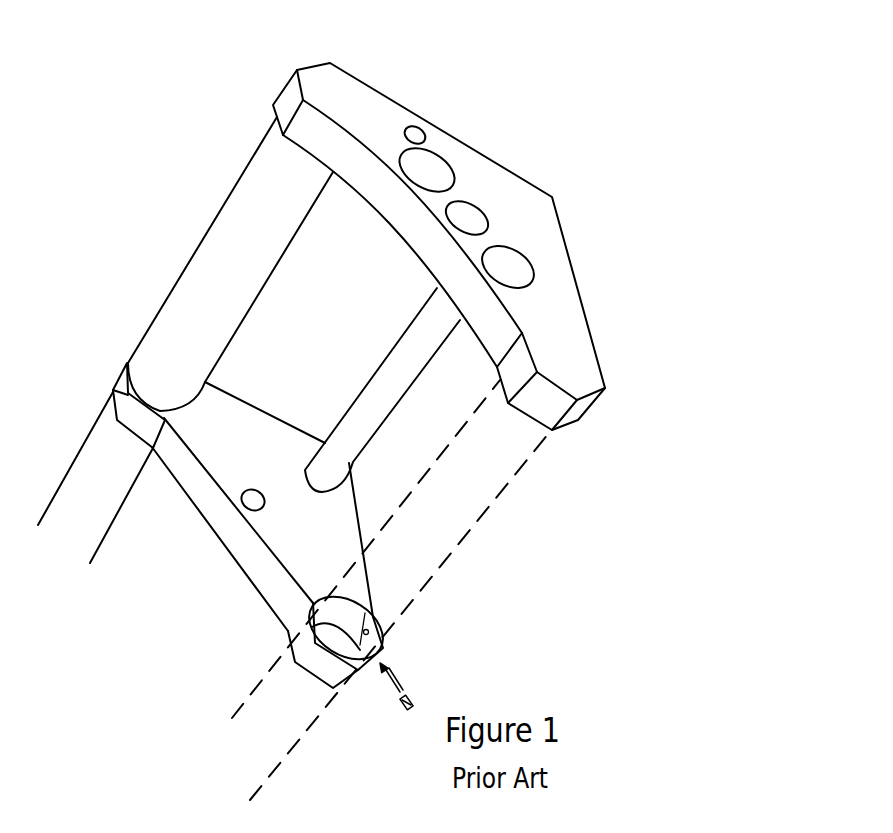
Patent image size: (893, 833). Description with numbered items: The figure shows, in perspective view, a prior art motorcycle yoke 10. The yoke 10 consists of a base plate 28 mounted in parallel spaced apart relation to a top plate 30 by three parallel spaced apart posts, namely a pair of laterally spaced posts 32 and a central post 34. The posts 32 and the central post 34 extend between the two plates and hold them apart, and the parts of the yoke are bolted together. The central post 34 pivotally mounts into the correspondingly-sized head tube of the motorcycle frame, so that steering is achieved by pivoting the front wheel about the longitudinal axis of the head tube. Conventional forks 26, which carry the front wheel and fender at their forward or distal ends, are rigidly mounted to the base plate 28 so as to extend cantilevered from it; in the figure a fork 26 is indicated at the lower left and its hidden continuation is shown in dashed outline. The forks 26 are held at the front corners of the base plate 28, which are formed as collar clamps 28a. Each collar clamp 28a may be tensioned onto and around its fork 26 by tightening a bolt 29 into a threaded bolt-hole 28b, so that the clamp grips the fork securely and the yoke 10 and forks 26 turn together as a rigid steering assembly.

The prior art yoke 10 is at (505, 117).
The forks 26 is at (114, 520).
The base plate 28 is at (258, 589).
The collar clamps 28a is at (365, 682).
The threaded bolt-holes 28b is at (375, 622).
The bolts 29 is at (411, 687).
The top plate 30 is at (583, 297).
The laterally spaced posts 32 is at (200, 247).
The central post 34 is at (375, 370).